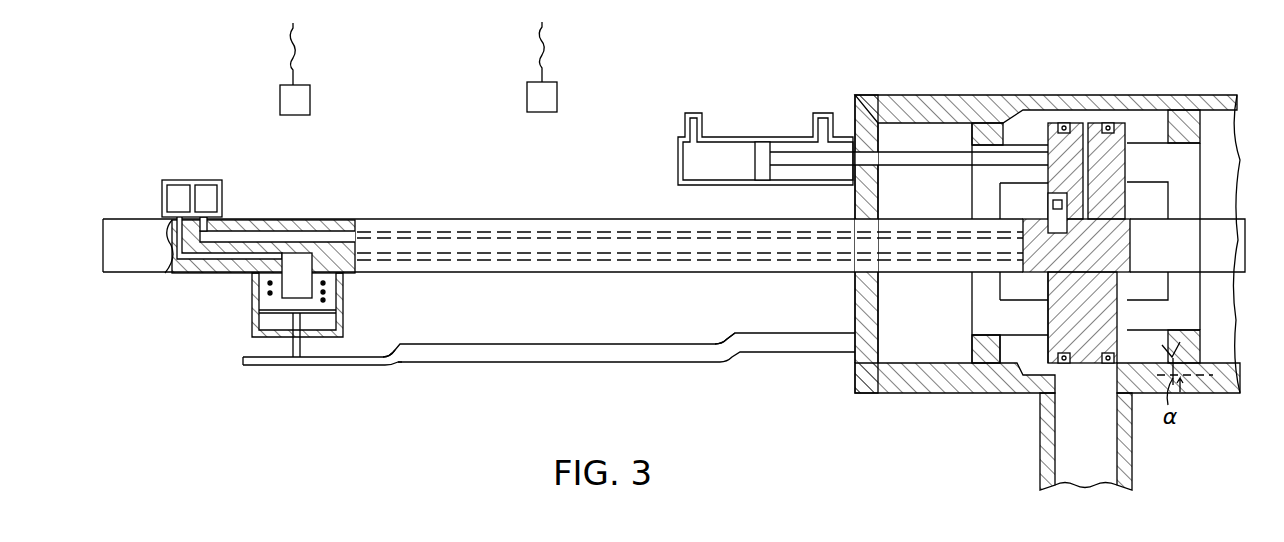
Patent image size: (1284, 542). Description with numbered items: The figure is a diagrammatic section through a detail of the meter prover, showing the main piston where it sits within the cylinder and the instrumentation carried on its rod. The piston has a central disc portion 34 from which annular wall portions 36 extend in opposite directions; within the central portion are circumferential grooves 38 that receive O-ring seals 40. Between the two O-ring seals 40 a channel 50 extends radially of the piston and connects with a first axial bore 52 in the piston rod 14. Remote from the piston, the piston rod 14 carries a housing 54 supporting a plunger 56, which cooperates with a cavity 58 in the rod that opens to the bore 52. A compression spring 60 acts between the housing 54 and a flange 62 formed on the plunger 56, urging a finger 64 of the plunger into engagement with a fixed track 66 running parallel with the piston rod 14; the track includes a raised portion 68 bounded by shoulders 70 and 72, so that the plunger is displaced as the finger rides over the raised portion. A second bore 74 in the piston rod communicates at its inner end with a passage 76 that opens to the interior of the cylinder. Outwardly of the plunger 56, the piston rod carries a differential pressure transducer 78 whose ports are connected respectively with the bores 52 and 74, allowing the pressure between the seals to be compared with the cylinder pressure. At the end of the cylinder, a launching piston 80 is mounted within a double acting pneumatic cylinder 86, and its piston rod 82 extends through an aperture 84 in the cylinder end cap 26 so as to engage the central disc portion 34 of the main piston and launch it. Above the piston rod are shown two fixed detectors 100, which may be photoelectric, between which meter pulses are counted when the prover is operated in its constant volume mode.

The piston rod 14 is at (440, 218).
The cylinder cap 26 is at (868, 94).
The central disc portion 34 is at (1048, 277).
The annular wall portion 36 is at (1228, 320).
The circumferential groove 38 is at (1108, 365).
The O-ring seal 40 is at (1108, 122).
The channel 50 is at (1127, 163).
The first axial bore 52 is at (605, 272).
The housing 54 is at (252, 286).
The plunger 56 is at (338, 293).
The cavity 58 is at (290, 256).
The compression spring 60 is at (268, 294).
The flange 62 is at (338, 314).
The finger 64 is at (296, 360).
The fixed track 66 is at (394, 364).
The raised portion 68 is at (540, 344).
The shoulder 70 is at (415, 363).
The shoulder 72 is at (730, 342).
The second bore 74 is at (342, 222).
The passage 76 is at (1048, 205).
The differential pressure transducer 78 is at (185, 180).
The launching piston 80 is at (755, 162).
The piston rod 82 is at (800, 167).
The aperture 84 is at (880, 176).
The pneumatic cylinder 86 is at (716, 137).
The fixed detector 100 is at (312, 98).